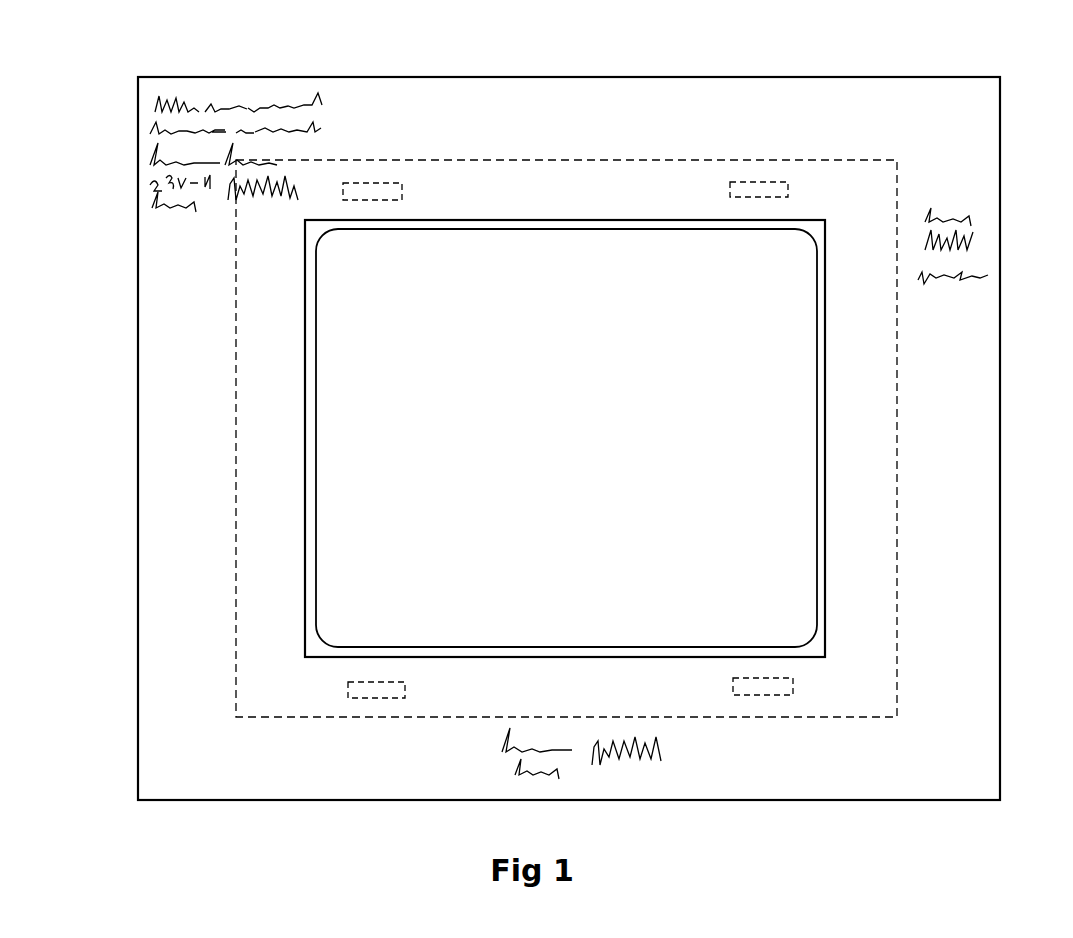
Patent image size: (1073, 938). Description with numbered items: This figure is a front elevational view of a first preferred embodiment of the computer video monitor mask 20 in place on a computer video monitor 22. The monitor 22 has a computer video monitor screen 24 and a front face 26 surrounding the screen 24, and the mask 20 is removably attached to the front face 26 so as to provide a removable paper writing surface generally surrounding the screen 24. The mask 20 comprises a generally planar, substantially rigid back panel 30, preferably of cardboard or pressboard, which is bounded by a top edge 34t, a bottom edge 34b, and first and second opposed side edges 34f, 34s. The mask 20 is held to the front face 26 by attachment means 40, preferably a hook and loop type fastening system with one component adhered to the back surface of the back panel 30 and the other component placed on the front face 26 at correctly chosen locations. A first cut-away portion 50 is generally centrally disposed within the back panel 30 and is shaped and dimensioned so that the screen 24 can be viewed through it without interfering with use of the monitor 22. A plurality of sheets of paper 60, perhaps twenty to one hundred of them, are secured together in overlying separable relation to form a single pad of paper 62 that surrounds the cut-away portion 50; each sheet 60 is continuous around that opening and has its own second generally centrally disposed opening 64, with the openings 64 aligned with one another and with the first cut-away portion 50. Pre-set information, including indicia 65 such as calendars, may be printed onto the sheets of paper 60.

The computer video monitor mask 20 is at (812, 88).
The computer video monitor 22 is at (236, 283).
The computer video monitor screen 24 is at (548, 426).
The front face 26 is at (465, 228).
The back panel 30 is at (1000, 268).
The top edge 34t is at (652, 77).
The bottom edge 34b is at (437, 800).
The first side edge 34f is at (138, 465).
The second side edge 34s is at (1000, 455).
The attachment means 40 is at (402, 188).
The first cut-away portion 50 is at (305, 420).
The sheets of paper 60 is at (547, 137).
The pad of paper 62 is at (1000, 395).
The second generally centrally disposed opening 64 is at (826, 430).
The indicia 65 is at (150, 133).